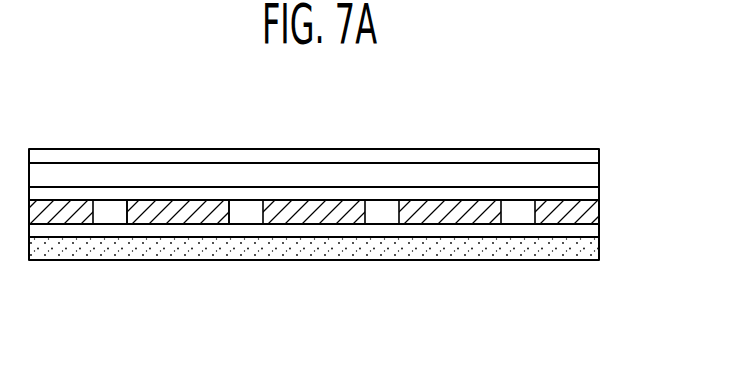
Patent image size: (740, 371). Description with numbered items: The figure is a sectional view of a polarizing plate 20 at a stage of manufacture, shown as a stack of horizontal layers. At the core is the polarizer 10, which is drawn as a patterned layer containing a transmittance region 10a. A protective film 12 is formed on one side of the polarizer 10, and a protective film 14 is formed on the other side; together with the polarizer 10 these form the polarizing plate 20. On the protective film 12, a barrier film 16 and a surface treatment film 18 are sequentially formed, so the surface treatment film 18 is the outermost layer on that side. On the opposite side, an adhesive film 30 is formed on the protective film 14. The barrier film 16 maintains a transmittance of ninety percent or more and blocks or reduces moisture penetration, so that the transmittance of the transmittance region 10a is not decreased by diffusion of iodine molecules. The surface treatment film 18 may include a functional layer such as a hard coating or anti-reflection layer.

The surface treatment film 18 is at (593, 155).
The barrier film 16 is at (594, 173).
The protective film 12 is at (593, 193).
The polarizer 10 is at (329, 261).
The transmittance region 10a is at (119, 208).
The protective film 14 is at (343, 241).
The polarizing plate 20 is at (350, 249).
The adhesive film 30 is at (592, 250).